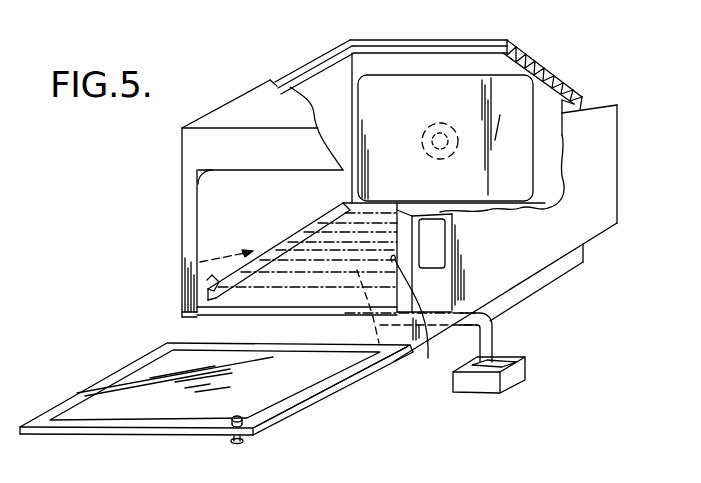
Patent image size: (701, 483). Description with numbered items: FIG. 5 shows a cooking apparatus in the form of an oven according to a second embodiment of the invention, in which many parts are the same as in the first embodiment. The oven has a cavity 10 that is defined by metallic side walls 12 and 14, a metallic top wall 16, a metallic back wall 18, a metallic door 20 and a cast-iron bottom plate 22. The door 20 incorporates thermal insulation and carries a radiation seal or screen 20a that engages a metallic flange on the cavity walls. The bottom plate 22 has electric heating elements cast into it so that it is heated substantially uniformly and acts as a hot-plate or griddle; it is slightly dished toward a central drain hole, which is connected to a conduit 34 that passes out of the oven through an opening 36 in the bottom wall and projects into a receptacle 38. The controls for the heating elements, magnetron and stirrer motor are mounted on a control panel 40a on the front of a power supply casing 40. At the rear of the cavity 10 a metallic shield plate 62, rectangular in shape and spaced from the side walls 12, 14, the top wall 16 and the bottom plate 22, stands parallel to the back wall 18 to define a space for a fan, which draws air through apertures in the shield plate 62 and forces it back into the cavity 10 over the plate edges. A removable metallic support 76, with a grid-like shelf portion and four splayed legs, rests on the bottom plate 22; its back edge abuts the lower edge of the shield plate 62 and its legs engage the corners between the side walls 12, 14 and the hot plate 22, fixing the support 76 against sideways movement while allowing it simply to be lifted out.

The cavity 10 is at (228, 227).
The side wall 12 is at (207, 205).
The side wall 14 is at (427, 293).
The top wall 16 is at (206, 181).
The back wall 18 is at (373, 60).
The door 20 is at (157, 410).
The radiation seal or screen 20a is at (133, 370).
The bottom plate 22 is at (240, 299).
The conduit 34 is at (494, 332).
The opening 36 is at (381, 350).
The receptacle 38 is at (518, 372).
The power supply casing 40 is at (614, 222).
The control panel 40a is at (440, 243).
The shield plate 62 is at (418, 90).
The metallic support 76 is at (200, 262).